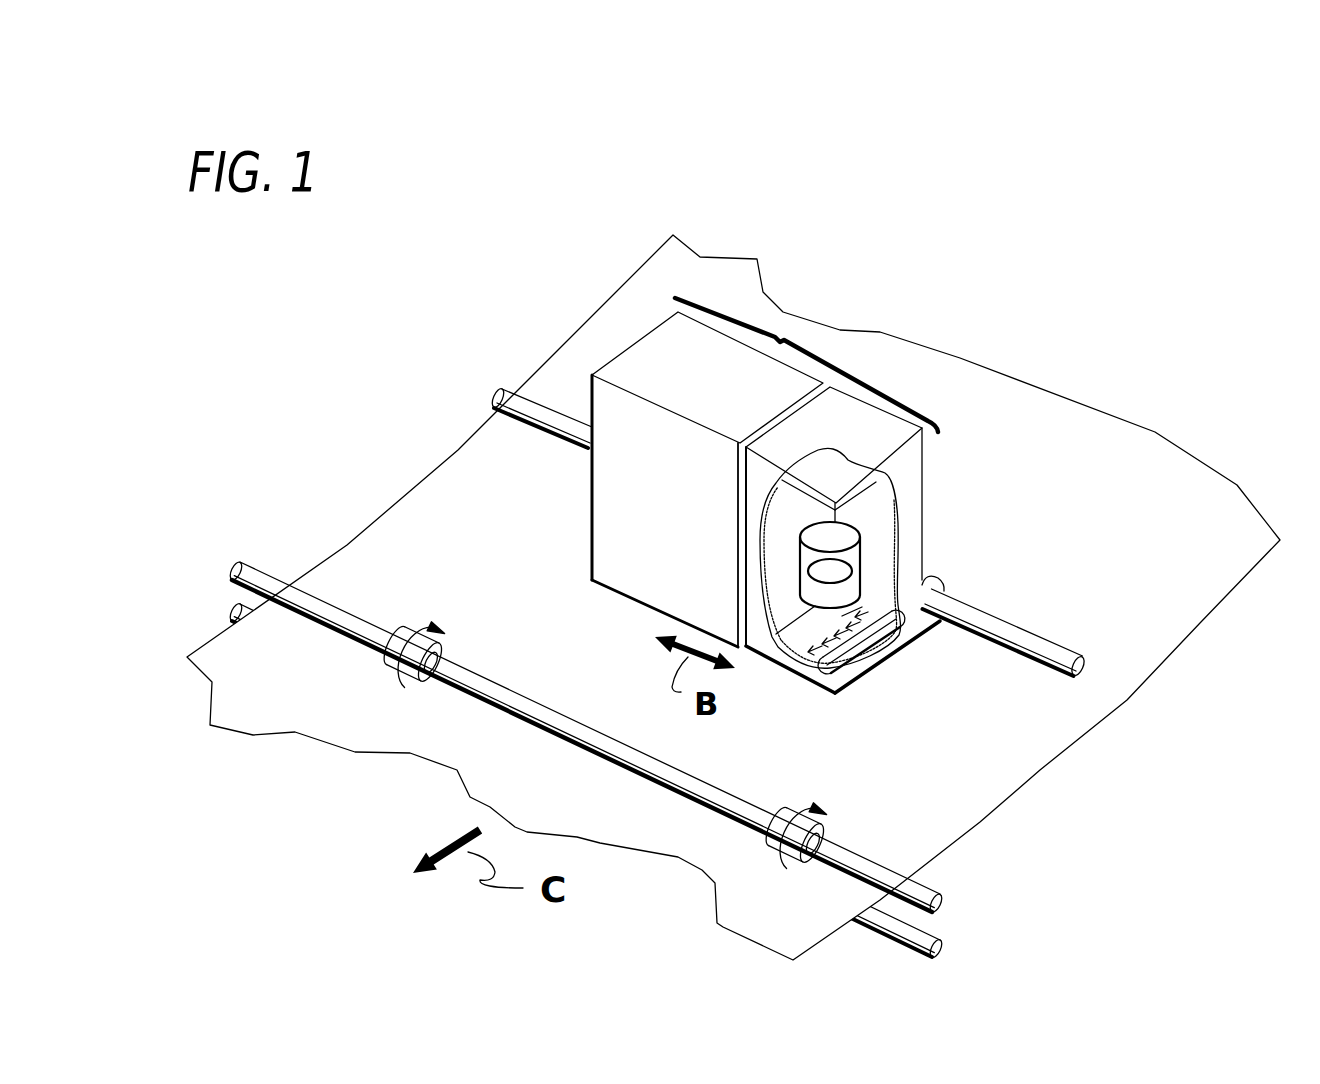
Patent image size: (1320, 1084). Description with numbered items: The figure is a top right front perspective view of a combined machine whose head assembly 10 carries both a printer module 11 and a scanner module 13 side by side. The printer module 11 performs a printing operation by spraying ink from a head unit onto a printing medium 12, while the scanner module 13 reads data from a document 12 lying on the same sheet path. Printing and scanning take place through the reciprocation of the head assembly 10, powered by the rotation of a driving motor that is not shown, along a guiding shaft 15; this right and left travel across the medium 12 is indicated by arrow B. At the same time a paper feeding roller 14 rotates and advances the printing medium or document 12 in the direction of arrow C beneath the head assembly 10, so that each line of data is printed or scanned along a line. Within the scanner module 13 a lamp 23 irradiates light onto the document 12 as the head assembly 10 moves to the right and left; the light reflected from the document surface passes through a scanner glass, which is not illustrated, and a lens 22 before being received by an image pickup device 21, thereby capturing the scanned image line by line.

The head assembly 10 is at (779, 338).
The printer module 11 is at (647, 358).
The printing medium 12 is at (1157, 445).
The scanner module 13 is at (852, 410).
The paper feeding roller 14 is at (870, 868).
The guiding shaft 15 is at (1040, 645).
The image pickup device 21 is at (880, 481).
The lens 22 is at (853, 553).
The lamp 23 is at (858, 648).